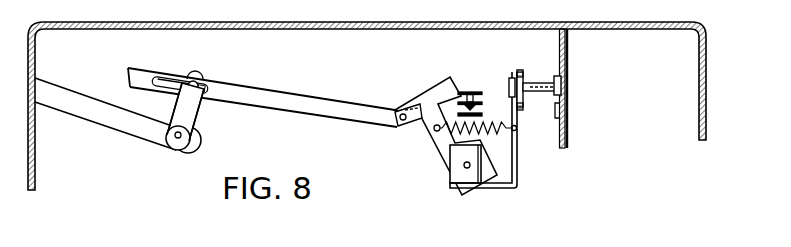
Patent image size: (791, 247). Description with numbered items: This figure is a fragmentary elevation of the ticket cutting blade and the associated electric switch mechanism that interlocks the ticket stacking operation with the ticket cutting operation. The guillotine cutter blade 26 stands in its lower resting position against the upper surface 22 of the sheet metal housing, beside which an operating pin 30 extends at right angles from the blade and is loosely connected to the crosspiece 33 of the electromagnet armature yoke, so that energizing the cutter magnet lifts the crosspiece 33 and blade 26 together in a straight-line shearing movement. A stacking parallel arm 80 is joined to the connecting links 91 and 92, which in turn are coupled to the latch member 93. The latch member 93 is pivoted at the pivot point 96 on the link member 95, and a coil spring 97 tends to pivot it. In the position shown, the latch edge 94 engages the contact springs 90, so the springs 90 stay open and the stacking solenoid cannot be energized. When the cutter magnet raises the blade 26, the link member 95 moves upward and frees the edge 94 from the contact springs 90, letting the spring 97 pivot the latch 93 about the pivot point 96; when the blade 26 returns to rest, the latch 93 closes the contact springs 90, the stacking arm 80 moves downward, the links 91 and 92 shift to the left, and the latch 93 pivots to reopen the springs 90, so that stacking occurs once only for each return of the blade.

The upper surface 22 is at (623, 29).
The guillotine cutter blade 26 is at (559, 50).
The operating pin 30 is at (529, 88).
The crosspiece 33 is at (516, 70).
The stacking parallel arm 80 is at (114, 124).
The contact springs 90 is at (465, 91).
The connecting link 91 is at (189, 118).
The connecting link 92 is at (264, 94).
The latch member 93 is at (425, 98).
The latch edge 94 is at (458, 82).
The link member 95 is at (517, 163).
The pivot point 96 is at (465, 167).
The coil spring 97 is at (484, 128).